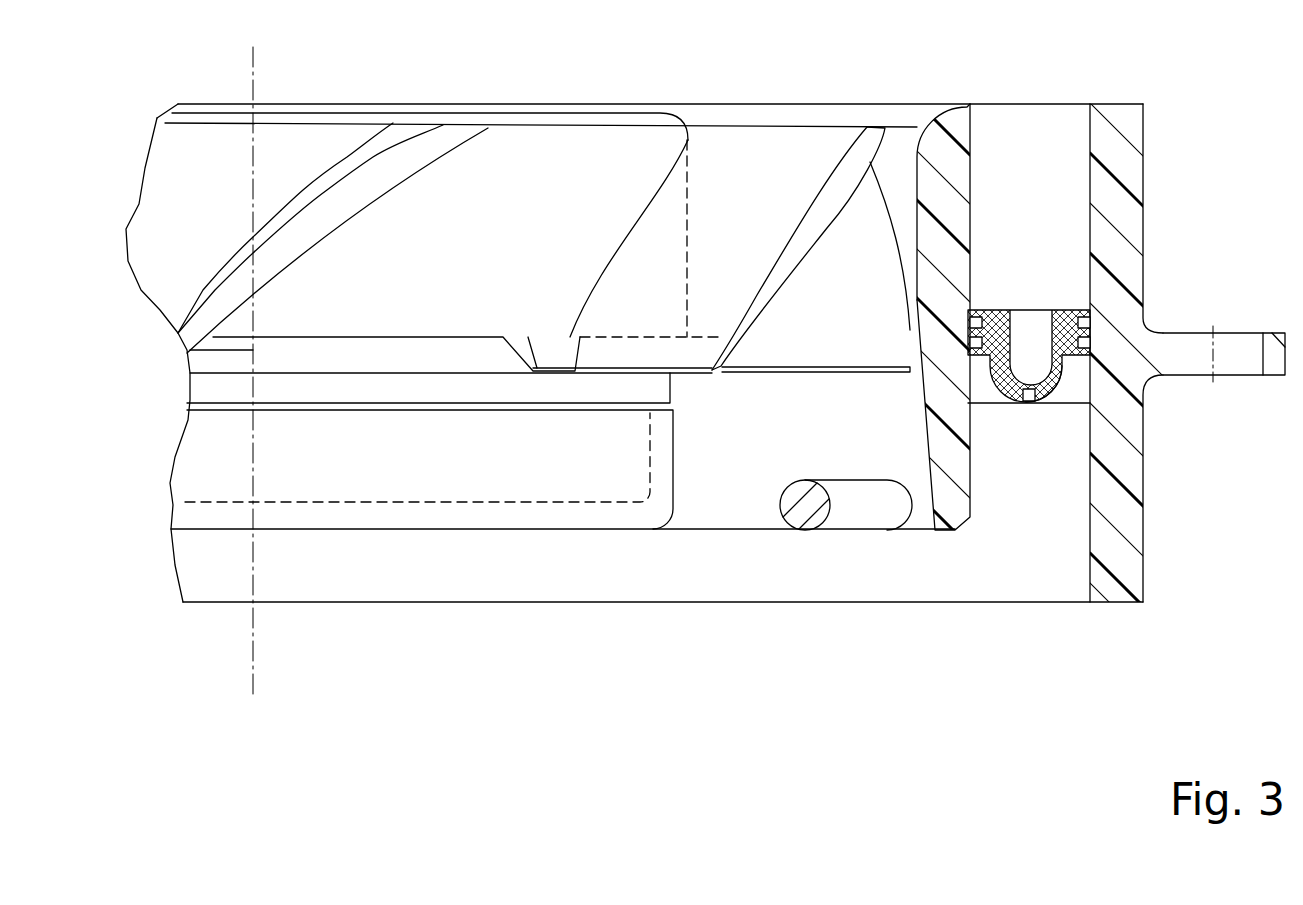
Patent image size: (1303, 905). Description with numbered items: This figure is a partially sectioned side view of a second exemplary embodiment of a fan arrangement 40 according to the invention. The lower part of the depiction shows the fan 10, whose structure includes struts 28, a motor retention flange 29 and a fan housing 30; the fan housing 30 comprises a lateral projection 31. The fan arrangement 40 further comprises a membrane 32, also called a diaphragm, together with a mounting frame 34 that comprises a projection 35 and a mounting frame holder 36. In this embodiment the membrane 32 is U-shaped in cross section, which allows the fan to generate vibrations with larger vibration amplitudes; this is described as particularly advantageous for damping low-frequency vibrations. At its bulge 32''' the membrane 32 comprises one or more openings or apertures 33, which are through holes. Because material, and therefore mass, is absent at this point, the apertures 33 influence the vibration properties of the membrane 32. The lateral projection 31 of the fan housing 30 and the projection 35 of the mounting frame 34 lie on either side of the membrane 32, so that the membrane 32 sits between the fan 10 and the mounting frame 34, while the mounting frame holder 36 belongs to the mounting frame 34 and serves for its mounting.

The fan 10 is at (346, 643).
The struts 28 is at (853, 513).
The motor retention flange 29 is at (660, 458).
The fan housing 30 is at (957, 122).
The lateral projection 31 is at (984, 312).
The membrane 32 is at (1029, 281).
The bulge 32''' is at (1052, 436).
The apertures 33 is at (1029, 402).
The mounting frame 34 is at (1088, 108).
The projection 35 is at (1086, 306).
The mounting frame holder 36 is at (1150, 328).
The fan arrangement 40 is at (1008, 640).